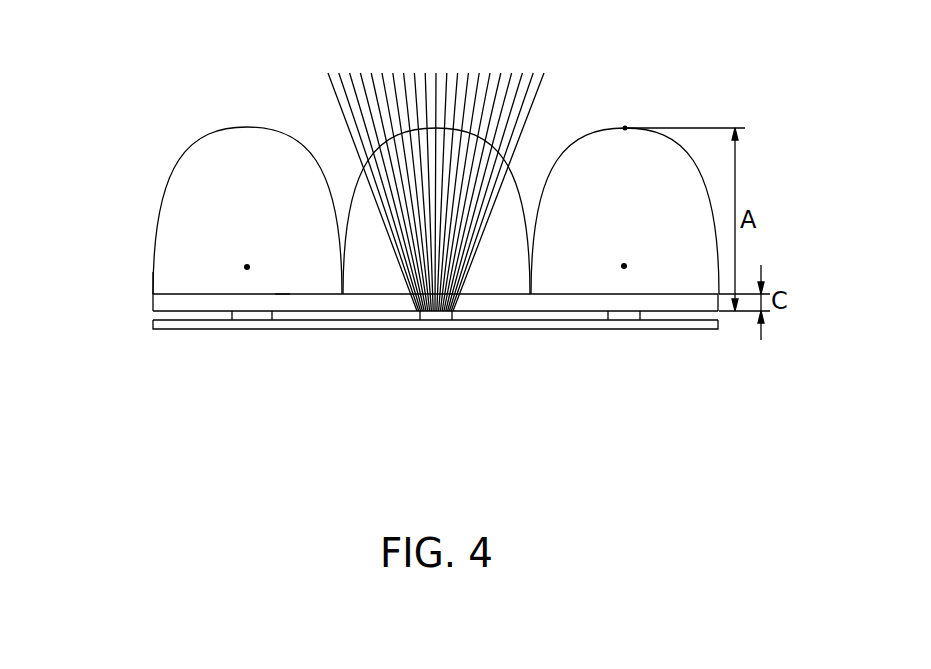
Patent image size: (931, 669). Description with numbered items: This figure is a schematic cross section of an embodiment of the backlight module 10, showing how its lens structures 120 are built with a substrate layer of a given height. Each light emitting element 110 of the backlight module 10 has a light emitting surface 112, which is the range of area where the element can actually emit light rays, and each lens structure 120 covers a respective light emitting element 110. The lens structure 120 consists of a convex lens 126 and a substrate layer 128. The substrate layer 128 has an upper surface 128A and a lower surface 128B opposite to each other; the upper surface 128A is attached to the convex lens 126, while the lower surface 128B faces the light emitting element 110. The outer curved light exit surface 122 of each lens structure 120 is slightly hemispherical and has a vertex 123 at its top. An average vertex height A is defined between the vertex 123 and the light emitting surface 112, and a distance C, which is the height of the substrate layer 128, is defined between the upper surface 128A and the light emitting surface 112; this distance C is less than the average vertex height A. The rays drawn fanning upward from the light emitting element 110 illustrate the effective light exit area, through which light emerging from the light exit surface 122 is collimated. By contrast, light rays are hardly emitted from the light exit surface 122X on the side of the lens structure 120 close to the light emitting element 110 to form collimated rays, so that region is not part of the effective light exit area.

The backlight module 10 is at (143, 33).
The light emitting element 110 is at (243, 313).
The light emitting surface 112 is at (625, 311).
The lens structure 120 is at (73, 197).
The light exit surface 122 is at (202, 147).
The light exit surface 122X is at (153, 272).
The vertex 123 is at (625, 128).
The convex lens 126 is at (173, 258).
The substrate layer 128 is at (217, 307).
The upper surface 128A is at (282, 294).
The lower surface 128B is at (273, 312).